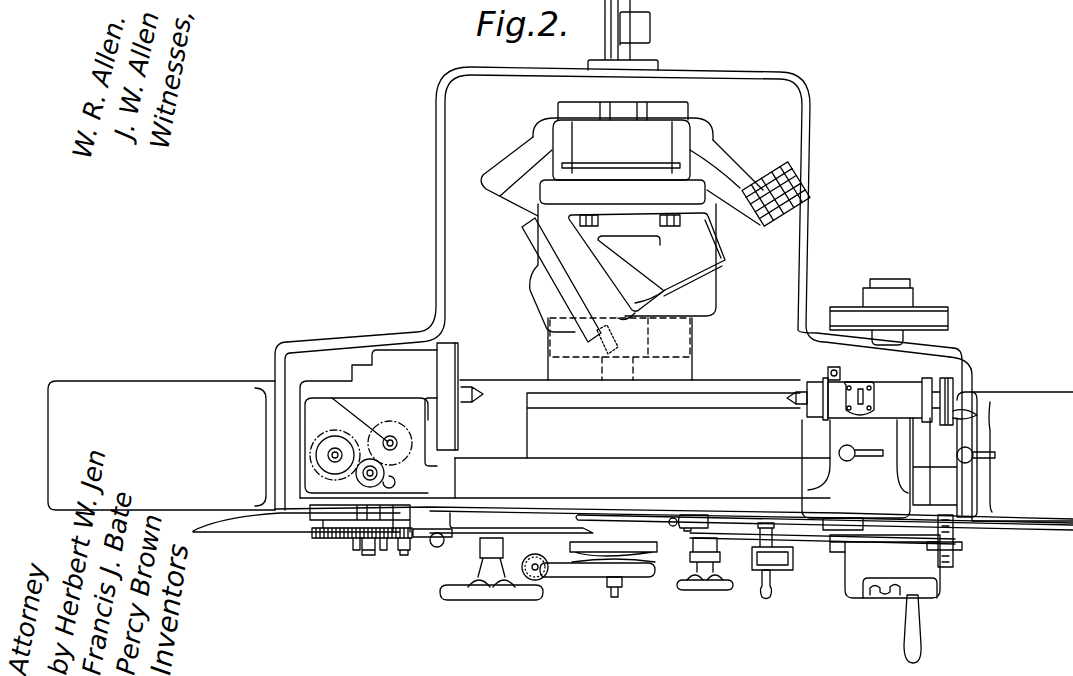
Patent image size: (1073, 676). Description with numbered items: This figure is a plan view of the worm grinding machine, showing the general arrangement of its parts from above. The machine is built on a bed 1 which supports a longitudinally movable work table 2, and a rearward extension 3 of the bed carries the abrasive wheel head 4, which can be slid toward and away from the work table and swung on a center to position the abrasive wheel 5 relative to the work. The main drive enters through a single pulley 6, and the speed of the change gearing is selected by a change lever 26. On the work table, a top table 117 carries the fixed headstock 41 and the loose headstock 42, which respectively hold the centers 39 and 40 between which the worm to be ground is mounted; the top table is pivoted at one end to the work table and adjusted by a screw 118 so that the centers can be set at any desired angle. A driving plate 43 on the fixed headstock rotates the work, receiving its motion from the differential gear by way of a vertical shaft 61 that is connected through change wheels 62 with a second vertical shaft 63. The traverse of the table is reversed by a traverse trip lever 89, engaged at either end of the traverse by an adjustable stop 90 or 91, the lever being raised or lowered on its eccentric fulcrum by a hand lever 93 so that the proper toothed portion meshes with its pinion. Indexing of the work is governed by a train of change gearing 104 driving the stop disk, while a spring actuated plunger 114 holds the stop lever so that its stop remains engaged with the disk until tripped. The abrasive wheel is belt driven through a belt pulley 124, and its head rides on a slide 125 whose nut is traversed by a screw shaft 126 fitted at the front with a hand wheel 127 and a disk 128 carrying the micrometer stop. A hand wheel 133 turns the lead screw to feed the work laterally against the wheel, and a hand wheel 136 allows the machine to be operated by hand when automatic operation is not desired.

The bed 1 is at (322, 346).
The work table 2 is at (169, 381).
The rearward extension of the bed 3 is at (435, 184).
The abrasive wheel head 4 is at (623, 277).
The abrasive wheel 5 is at (600, 347).
The pulley 6 is at (932, 315).
The change lever 26 is at (917, 608).
The fixed center 39 is at (477, 403).
The fixed center 40 is at (788, 400).
The fixed headstock 41 is at (377, 424).
The loose headstock 42 is at (893, 390).
The driving plate 43 is at (462, 351).
The vertical shaft 61 is at (328, 455).
The change wheels 62 is at (393, 422).
The vertical shaft 63 is at (349, 411).
The traverse trip lever 89 is at (767, 522).
The adjustable stop 90 is at (836, 520).
The adjustable stop 91 is at (699, 515).
The hand lever 93 is at (771, 586).
The change gearing 104 is at (313, 532).
The spring actuated plunger 114 is at (440, 548).
The top table 117 is at (674, 462).
The screw 118 is at (948, 562).
The belt pulley 124 is at (623, 141).
The slide 125 is at (708, 303).
The screw shaft 126 is at (616, 598).
The hand wheel 127 is at (589, 577).
The disk 128 is at (650, 565).
The hand wheel 133 is at (699, 590).
The hand wheel 136 is at (500, 600).